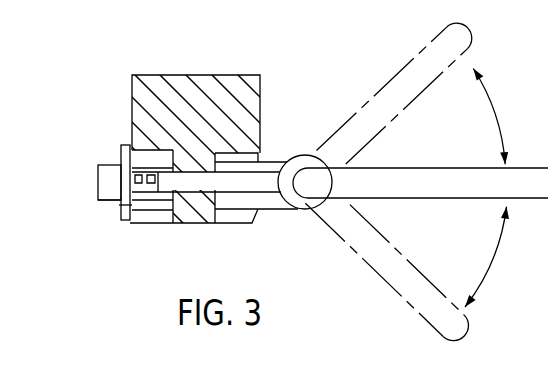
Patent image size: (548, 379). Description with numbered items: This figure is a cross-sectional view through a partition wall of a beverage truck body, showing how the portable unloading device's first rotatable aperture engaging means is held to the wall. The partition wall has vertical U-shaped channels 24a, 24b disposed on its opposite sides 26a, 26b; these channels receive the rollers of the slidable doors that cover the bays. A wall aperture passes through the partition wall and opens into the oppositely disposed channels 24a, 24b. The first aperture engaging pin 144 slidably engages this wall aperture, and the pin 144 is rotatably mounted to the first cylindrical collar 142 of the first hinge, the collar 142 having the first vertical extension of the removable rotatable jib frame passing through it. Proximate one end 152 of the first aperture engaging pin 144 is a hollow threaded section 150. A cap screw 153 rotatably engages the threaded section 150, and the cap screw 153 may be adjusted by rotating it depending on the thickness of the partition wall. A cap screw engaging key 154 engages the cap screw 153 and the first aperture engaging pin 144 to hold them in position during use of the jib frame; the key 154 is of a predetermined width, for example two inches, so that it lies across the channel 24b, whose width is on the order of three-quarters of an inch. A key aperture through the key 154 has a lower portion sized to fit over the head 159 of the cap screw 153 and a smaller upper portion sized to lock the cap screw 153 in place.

The side of the partition wall 26a is at (260, 103).
The side of the partition wall 26b is at (132, 90).
The vertical U-shaped channel 24a is at (262, 154).
The vertical U-shaped channel 24b is at (153, 150).
The first aperture engaging pin 144 is at (215, 184).
The first cylindrical collar 142 is at (303, 209).
The hollow threaded section 150 is at (134, 220).
The end of the first aperture engaging pin 152 is at (120, 150).
The cap screw 153 is at (98, 181).
The cap screw engaging key 154 is at (121, 207).
The head of the cap screw 159 is at (104, 199).